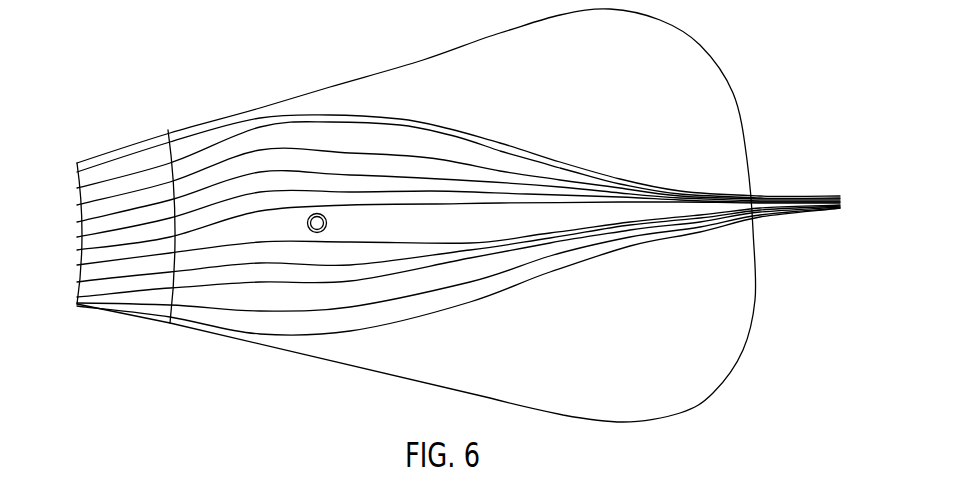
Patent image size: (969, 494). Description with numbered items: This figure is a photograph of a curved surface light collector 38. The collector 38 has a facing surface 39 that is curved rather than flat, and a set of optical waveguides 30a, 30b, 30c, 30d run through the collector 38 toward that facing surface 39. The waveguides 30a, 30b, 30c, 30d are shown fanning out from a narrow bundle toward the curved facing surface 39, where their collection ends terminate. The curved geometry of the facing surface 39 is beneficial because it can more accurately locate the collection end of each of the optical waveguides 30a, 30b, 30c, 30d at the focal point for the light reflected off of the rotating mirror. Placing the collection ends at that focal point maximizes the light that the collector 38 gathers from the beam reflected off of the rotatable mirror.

The optical waveguide 30a is at (383, 123).
The optical waveguide 30b is at (436, 158).
The optical waveguide 30c is at (482, 181).
The optical waveguide 30d is at (533, 195).
The collector 38 is at (647, 106).
The facing surface 39 is at (78, 235).